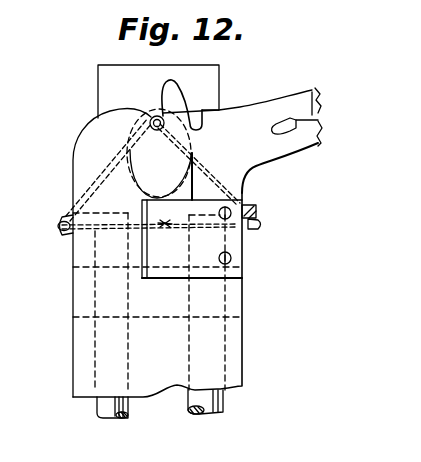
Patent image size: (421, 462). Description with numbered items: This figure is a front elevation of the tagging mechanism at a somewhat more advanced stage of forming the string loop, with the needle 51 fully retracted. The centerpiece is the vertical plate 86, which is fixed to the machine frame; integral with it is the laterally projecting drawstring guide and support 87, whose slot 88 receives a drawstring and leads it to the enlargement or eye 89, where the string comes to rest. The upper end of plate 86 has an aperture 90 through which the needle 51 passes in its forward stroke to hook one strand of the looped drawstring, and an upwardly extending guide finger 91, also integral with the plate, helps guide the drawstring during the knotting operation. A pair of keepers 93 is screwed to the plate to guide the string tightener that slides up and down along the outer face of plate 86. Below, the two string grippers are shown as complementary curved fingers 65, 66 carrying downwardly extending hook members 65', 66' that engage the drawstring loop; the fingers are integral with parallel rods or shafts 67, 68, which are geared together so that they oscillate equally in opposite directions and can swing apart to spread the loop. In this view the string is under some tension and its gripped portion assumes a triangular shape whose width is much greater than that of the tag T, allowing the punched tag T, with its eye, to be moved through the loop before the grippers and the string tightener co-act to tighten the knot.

The needle 51 is at (150, 113).
The curved finger 65 is at (46, 214).
The hook member 65' is at (45, 238).
The curved finger 66 is at (271, 203).
The hook member 66' is at (272, 241).
The rod or shaft 67 is at (103, 400).
The rod or shaft 68 is at (218, 398).
The vertical plate 86 is at (78, 360).
The drawstring guide and support 87 is at (296, 150).
The slot 88 is at (315, 88).
The enlargement or eye 89 is at (288, 116).
The aperture 90 is at (155, 115).
The guide finger 91 is at (173, 96).
The keepers 93 is at (208, 270).
The tag T is at (190, 141).